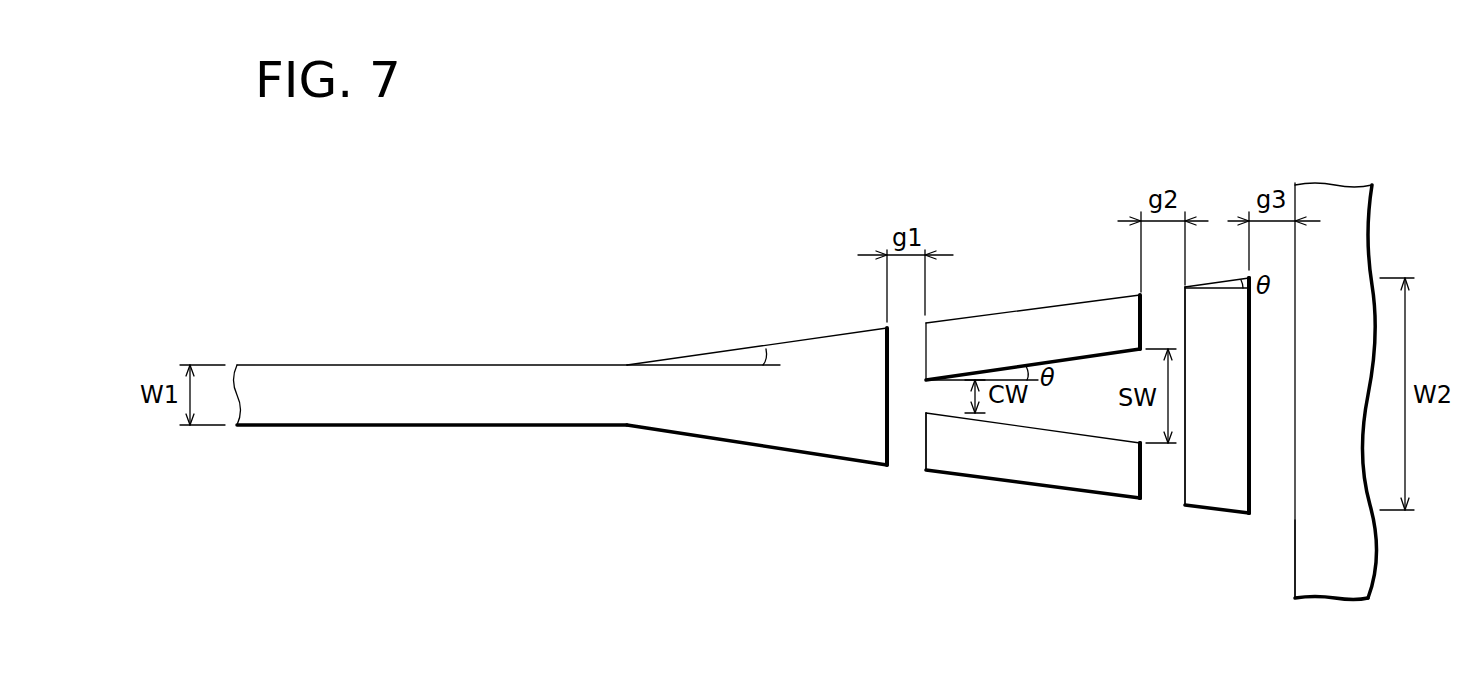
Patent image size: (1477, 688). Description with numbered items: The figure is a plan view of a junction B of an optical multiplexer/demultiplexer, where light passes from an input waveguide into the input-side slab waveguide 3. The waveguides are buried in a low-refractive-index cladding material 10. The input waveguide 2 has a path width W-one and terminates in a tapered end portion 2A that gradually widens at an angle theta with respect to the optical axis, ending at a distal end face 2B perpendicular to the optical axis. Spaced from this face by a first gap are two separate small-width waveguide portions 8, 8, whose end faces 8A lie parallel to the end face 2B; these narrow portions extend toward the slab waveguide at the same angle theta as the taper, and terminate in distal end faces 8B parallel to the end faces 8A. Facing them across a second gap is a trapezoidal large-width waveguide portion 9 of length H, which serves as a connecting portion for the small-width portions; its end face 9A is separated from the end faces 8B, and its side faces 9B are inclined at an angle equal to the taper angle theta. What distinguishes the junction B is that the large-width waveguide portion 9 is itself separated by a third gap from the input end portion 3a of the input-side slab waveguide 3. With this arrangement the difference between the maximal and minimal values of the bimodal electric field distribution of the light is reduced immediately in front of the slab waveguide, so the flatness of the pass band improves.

The input waveguide 2 is at (378, 377).
The tapered end portion 2A is at (737, 432).
The distal end face 2B is at (891, 468).
The input-side slab waveguide 3 is at (1333, 192).
The input end portion 3a is at (1293, 575).
The small-width waveguide portion 8 is at (988, 323).
The end face 8A is at (916, 472).
The distal end face 8B is at (1142, 500).
The large-width waveguide portion 9 is at (1217, 497).
The end face 9A is at (1183, 487).
The side face 9B is at (1235, 517).
The cladding material 10 is at (590, 482).
The junction B is at (733, 207).